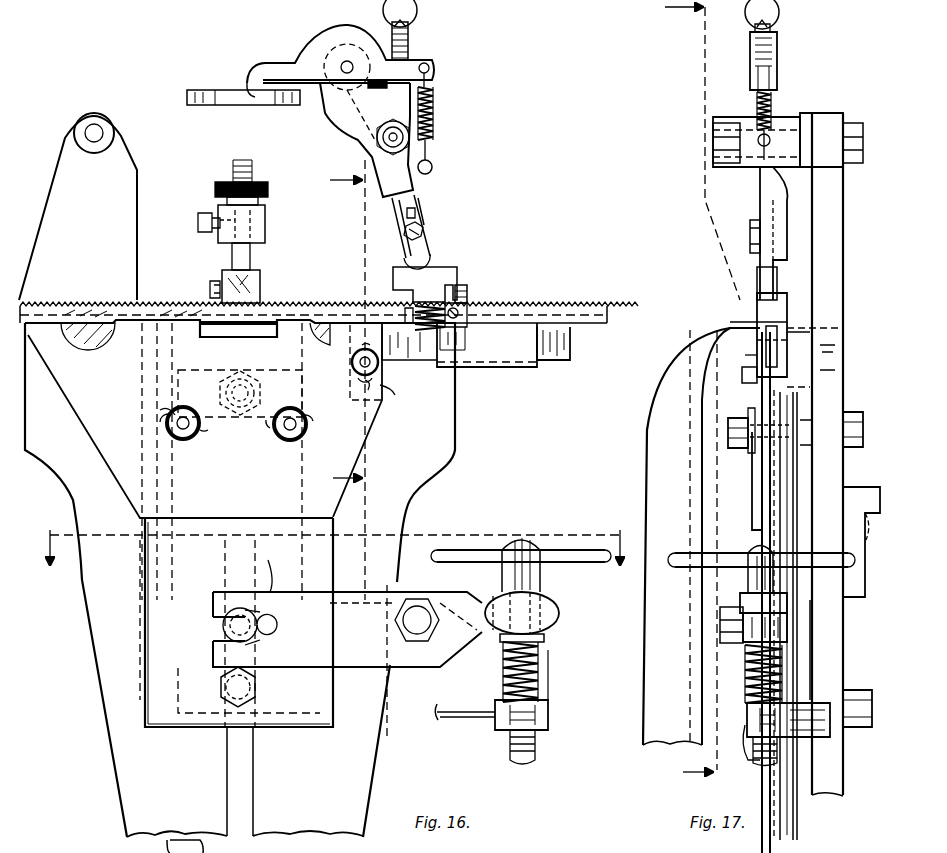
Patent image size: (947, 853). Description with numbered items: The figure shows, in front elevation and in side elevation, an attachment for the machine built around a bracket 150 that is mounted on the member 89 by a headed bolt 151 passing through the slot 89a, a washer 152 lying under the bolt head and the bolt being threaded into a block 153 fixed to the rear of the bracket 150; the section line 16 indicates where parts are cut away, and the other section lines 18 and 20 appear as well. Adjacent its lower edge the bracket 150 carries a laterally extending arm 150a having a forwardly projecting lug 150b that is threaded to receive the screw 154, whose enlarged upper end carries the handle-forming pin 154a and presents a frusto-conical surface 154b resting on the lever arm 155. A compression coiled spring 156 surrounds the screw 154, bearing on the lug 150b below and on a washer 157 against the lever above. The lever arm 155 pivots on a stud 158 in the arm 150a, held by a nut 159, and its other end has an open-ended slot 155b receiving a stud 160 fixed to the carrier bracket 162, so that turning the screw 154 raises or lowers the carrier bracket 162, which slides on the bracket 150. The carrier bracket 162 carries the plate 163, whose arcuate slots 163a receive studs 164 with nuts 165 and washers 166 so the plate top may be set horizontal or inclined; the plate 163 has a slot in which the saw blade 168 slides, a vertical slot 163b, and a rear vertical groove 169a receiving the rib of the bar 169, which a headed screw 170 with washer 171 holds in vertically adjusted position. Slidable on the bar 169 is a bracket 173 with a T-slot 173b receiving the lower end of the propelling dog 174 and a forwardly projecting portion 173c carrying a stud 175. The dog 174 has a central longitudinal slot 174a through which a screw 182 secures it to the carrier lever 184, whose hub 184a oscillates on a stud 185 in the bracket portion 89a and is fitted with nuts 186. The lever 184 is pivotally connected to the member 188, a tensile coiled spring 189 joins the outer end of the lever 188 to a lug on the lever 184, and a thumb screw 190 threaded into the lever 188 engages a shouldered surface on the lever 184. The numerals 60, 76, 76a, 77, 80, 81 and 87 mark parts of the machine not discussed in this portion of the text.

In FIG. 17, the section line 16— 16 is at (702, 399).
In FIG. 16, the section line 18- 18 is at (330, 539).
In FIG. 16, the section line 20- 20 is at (353, 380).
In FIG. 16, the feed screw block 60 is at (260, 220).
In FIG. 16, the feed screw stem 76 is at (250, 255).
In FIG. 16, the feed screw foot 76a is at (262, 292).
In FIG. 16, the knurled knob 77 is at (288, 180).
In FIG. 16, the sleeve 80 is at (225, 282).
In FIG. 16, the set screw 81 is at (205, 212).
In FIG. 16, the plate 87 is at (200, 90).
In FIG. 16, the member 89 is at (372, 748).
In FIG. 17, the member 89 is at (830, 470).
In FIG. 16, the slot 89a is at (253, 772).
In FIG. 17, the slot 89a is at (846, 454).
In FIG. 16, the bracket 150 is at (197, 382).
In FIG. 16, the laterally extending arm 150a is at (390, 778).
In FIG. 17, the laterally extending arm 150a is at (810, 650).
In FIG. 16, the forwardly projecting lug 150b is at (550, 712).
In FIG. 17, the forwardly projecting lug 150b is at (786, 747).
In FIG. 16, the headed bolt 151 is at (250, 385).
In FIG. 17, the headed bolt 151 is at (850, 415).
In FIG. 17, the washer 152 is at (842, 440).
In FIG. 17, the block 153 is at (803, 408).
In FIG. 16, the screw 154 is at (550, 548).
In FIG. 17, the screw 154 is at (761, 656).
In FIG. 16, the handle-forming pin 154a is at (555, 583).
In FIG. 17, the handle-forming pin 154a is at (750, 580).
In FIG. 16, the frusto-conical surface 154b is at (560, 605).
In FIG. 17, the frusto-conical surface 154b is at (740, 600).
In FIG. 16, the lever arm 155 is at (365, 592).
In FIG. 17, the lever arm 155 is at (740, 650).
In FIG. 16, the open-ended longitudinally extending slot 155b is at (268, 590).
In FIG. 16, the compression coiled spring 156 is at (548, 650).
In FIG. 17, the compression coiled spring 156 is at (750, 690).
In FIG. 16, the washer 157 is at (548, 636).
In FIG. 16, the stud 158 is at (416, 606).
In FIG. 16, the nut 159 is at (400, 628).
In FIG. 17, the nut 159 is at (720, 627).
In FIG. 16, the stud 160 is at (225, 626).
In FIG. 16, the carrier bracket 162 is at (148, 571).
In FIG. 17, the carrier bracket 162 is at (775, 492).
In FIG. 16, the plate 163 is at (78, 402).
In FIG. 17, the plate 163 is at (752, 478).
In FIG. 16, the arcuate slots 163a is at (165, 412).
In FIG. 16, the vertical slot 163b is at (372, 385).
In FIG. 16, the stud 164 is at (236, 437).
In FIG. 17, the stud 164 is at (760, 435).
In FIG. 17, the nut 165 is at (738, 415).
In FIG. 17, the washer 166 is at (728, 428).
In FIG. 16, the saw blade 168 is at (578, 318).
In FIG. 17, the saw blade 168 is at (757, 316).
In FIG. 16, the bar 169 is at (560, 345).
In FIG. 17, the bar 169 is at (778, 355).
In FIG. 17, the vertical groove 169a is at (780, 340).
In FIG. 16, the headed screw 170 is at (378, 362).
In FIG. 17, the headed screw 170 is at (745, 372).
In FIG. 16, the washer 171 is at (378, 372).
In FIG. 17, the washer 171 is at (765, 335).
In FIG. 16, the bracket 173 is at (518, 345).
In FIG. 17, the bracket 173 is at (757, 302).
In FIG. 16, the T-slot 173b is at (445, 270).
In FIG. 16, the forwardly projecting portion 173c is at (470, 290).
In FIG. 16, the propelling dog 174 is at (422, 245).
In FIG. 17, the propelling dog 174 is at (762, 262).
In FIG. 16, the central longitudinal slot 174a is at (418, 212).
In FIG. 16, the stud 175 is at (404, 312).
In FIG. 16, the screw 182 is at (407, 233).
In FIG. 17, the screw 182 is at (757, 235).
In FIG. 16, the carrier lever 184 is at (345, 112).
In FIG. 17, the carrier lever 184 is at (770, 190).
In FIG. 17, the hub 184a is at (752, 120).
In FIG. 16, the stud 185 is at (388, 120).
In FIG. 17, the stud 185 is at (713, 137).
In FIG. 16, the nuts 186 is at (418, 167).
In FIG. 17, the nuts 186 is at (718, 148).
In FIG. 16, the member 188 is at (290, 75).
In FIG. 16, the tensile coiled spring 189 is at (435, 108).
In FIG. 17, the tensile coiled spring 189 is at (773, 103).
In FIG. 16, the thumb screw 190 is at (410, 32).
In FIG. 17, the thumb screw 190 is at (781, 22).